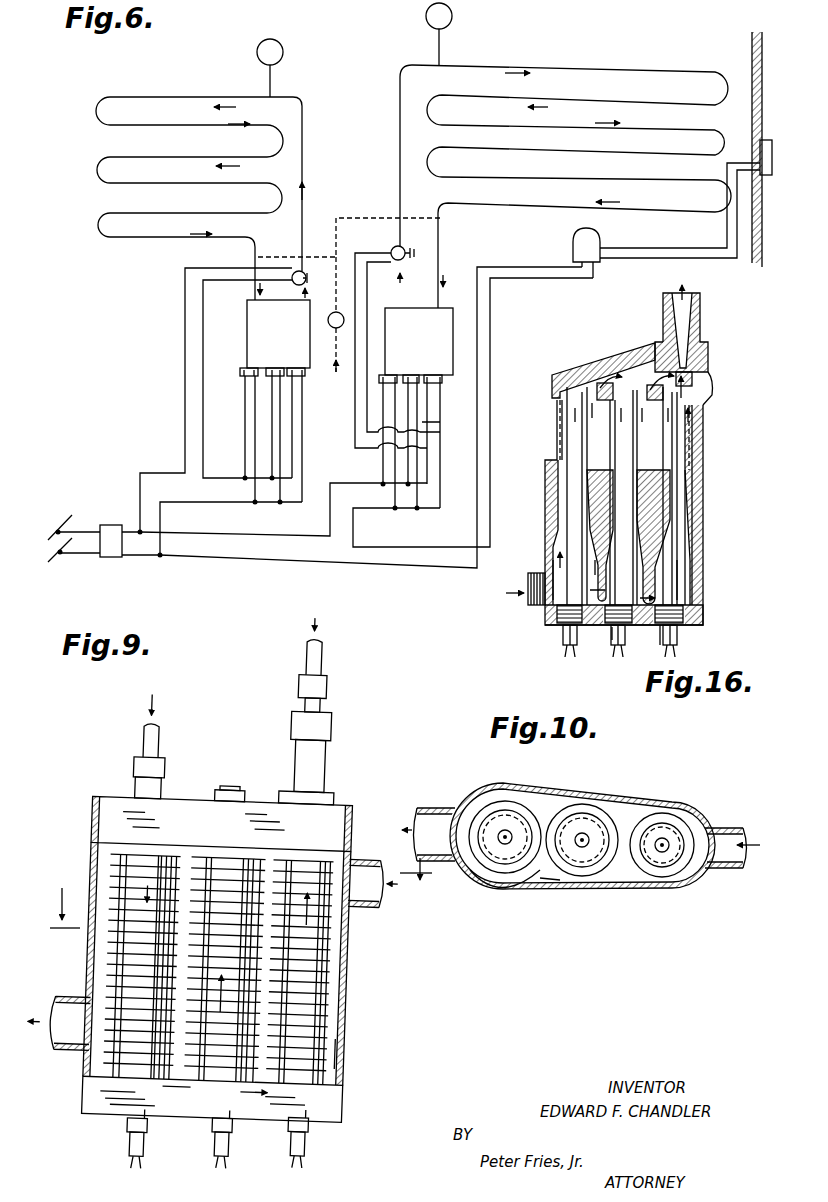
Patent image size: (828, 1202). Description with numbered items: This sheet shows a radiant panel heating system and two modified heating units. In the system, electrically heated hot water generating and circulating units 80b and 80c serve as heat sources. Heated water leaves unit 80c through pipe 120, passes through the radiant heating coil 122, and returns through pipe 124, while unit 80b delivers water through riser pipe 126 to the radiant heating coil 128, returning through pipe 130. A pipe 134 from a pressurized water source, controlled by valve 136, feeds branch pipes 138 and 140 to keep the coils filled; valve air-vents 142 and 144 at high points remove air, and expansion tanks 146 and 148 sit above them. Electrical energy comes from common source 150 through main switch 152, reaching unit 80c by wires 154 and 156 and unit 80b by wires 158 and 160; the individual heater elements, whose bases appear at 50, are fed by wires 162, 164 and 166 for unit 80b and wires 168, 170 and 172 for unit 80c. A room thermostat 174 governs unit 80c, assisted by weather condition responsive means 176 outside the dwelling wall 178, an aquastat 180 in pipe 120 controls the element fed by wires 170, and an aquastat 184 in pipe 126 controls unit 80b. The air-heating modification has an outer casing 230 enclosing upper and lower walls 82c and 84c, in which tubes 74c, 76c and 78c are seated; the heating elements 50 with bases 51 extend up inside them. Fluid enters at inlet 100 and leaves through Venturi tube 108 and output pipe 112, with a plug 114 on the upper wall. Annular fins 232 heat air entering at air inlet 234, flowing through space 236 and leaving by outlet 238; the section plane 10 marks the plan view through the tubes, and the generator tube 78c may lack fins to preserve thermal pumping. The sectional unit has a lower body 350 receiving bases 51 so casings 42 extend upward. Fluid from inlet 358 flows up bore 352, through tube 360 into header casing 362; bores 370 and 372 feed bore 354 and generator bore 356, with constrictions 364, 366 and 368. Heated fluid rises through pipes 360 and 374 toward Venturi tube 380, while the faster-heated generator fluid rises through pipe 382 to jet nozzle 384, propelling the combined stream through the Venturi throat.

In FIG. 6, the radiant heating coil 122 is at (604, 70).
In FIG. 6, the pipe 124 is at (443, 268).
In FIG. 6, the pipe 126 is at (302, 249).
In FIG. 6, the radiant heating coil 128 is at (207, 92).
In FIG. 6, the pipe 130 is at (254, 263).
In FIG. 6, the pipe 134 is at (335, 330).
In FIG. 6, the valve 136 is at (323, 295).
In FIG. 6, the branch pipe 138 is at (321, 273).
In FIG. 6, the branch pipe 140 is at (373, 218).
In FIG. 6, the valve air-vent 142 is at (441, 52).
In FIG. 6, the valve air-vent 144 is at (272, 87).
In FIG. 6, the expansion tank 146 is at (453, 17).
In FIG. 6, the expansion tank 148 is at (284, 52).
In FIG. 6, the common source 150 is at (58, 519).
In FIG. 6, the main switch 152 is at (109, 524).
In FIG. 6, the wire 154 is at (355, 539).
In FIG. 6, the wire 156 is at (329, 528).
In FIG. 6, the wire 158 is at (161, 518).
In FIG. 6, the wire 160 is at (141, 488).
In FIG. 6, the wire 162 is at (244, 403).
In FIG. 6, the wire 164 is at (270, 421).
In FIG. 6, the wire 166 is at (305, 418).
In FIG. 6, the wire 168 is at (395, 410).
In FIG. 6, the wire 170 is at (441, 423).
In FIG. 6, the wire 172 is at (442, 457).
In FIG. 6, the room thermostat 174 is at (572, 248).
In FIG. 6, the weather condition responsive means 176 is at (767, 139).
In FIG. 6, the dwelling wall 178 is at (751, 52).
In FIG. 6, the aquastat 180 is at (406, 246).
In FIG. 6, the aquastat 184 is at (293, 274).
In FIG. 6, the pipe 120 is at (397, 298).
In FIG. 6, the electric heating unit 80b is at (247, 352).
In FIG. 6, the electric heating unit 80c is at (428, 348).
In FIG. 6, the electric heating element 50 is at (300, 368).
In FIG. 16, the electric heating element 50 is at (560, 628).
In FIG. 9, the electric heating element 50 is at (232, 1143).
In FIG. 16, the base 51 is at (662, 631).
In FIG. 9, the base 51 is at (160, 1122).
In FIG. 16, the casing 42 is at (578, 433).
In FIG. 9, the tube 74c is at (125, 878).
In FIG. 10, the tube 74c is at (517, 872).
In FIG. 9, the tube 76c is at (216, 852).
In FIG. 10, the tube 76c is at (585, 877).
In FIG. 9, the generator tube 78c is at (315, 855).
In FIG. 10, the generator tube 78c is at (665, 877).
In FIG. 9, the upper wall 82c is at (113, 797).
In FIG. 9, the lower wall 84c is at (105, 1120).
In FIG. 9, the inlet 100 is at (160, 745).
In FIG. 9, the Venturi tube 108 is at (327, 775).
In FIG. 9, the output pipe 112 is at (323, 667).
In FIG. 9, the plug 114 is at (222, 789).
In FIG. 9, the outer casing 230 is at (347, 1027).
In FIG. 10, the outer casing 230 is at (618, 792).
In FIG. 9, the annular fin 232 is at (112, 957).
In FIG. 10, the annular fin 232 is at (575, 805).
In FIG. 9, the air inlet 234 is at (373, 850).
In FIG. 10, the air inlet 234 is at (718, 870).
In FIG. 9, the space 236 is at (338, 1049).
In FIG. 10, the space 236 is at (545, 884).
In FIG. 9, the outlet 238 is at (66, 1056).
In FIG. 10, the outlet 238 is at (445, 806).
In FIG. 9, the section plane 10 is at (65, 918).
In FIG. 10, the section plane 10 is at (417, 885).
In FIG. 16, the lower body 350 is at (705, 551).
In FIG. 16, the bore 352 is at (553, 569).
In FIG. 16, the bore 354 is at (606, 570).
In FIG. 16, the generator bore 356 is at (688, 570).
In FIG. 16, the inlet 358 is at (527, 599).
In FIG. 16, the tube 360 is at (560, 414).
In FIG. 16, the header casing 362 is at (620, 363).
In FIG. 16, the constriction 364 is at (556, 533).
In FIG. 16, the constriction 366 is at (602, 535).
In FIG. 16, the constriction 368 is at (707, 522).
In FIG. 16, the bore 370 is at (592, 626).
In FIG. 16, the bore 372 is at (656, 595).
In FIG. 16, the pipe 374 is at (616, 392).
In FIG. 16, the Venturi tube 380 is at (700, 335).
In FIG. 16, the pipe 382 is at (700, 425).
In FIG. 16, the jet nozzle 384 is at (695, 380).